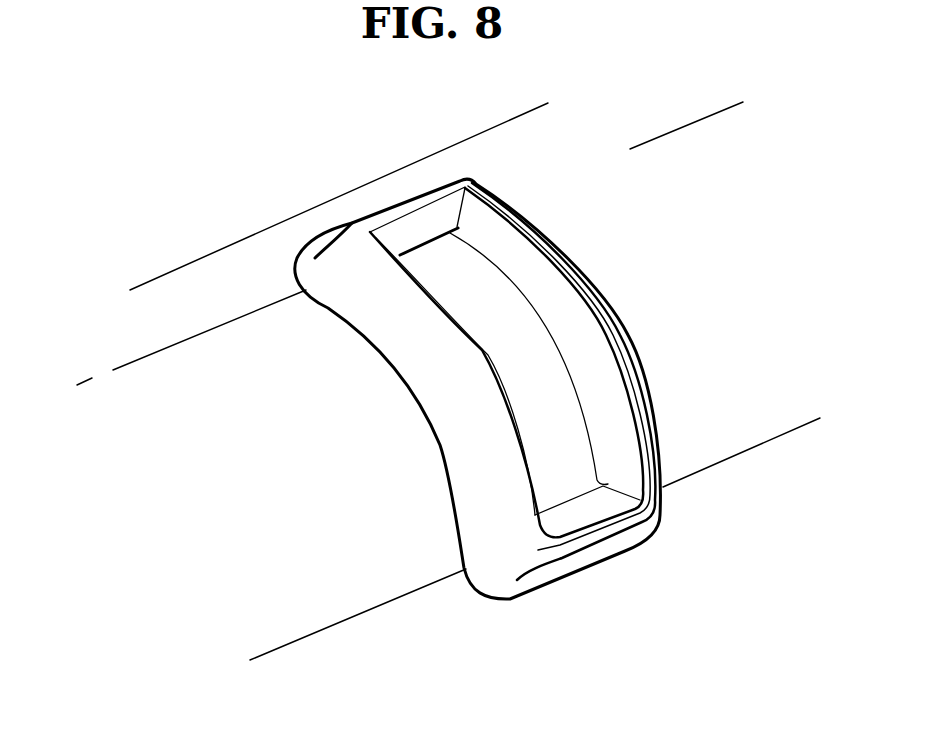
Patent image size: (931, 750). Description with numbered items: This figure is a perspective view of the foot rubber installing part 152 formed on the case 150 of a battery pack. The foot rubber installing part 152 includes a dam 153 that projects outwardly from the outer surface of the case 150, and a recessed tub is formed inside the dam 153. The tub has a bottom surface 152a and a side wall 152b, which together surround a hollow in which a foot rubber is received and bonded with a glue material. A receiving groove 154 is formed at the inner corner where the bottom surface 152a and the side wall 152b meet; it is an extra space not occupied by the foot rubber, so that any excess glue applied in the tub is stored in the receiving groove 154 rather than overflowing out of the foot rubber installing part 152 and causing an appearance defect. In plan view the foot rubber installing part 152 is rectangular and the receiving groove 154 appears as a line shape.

The case 150 is at (355, 169).
The foot rubber installing part 152 is at (622, 293).
The bottom surface 152a is at (547, 396).
The side wall 152b is at (617, 443).
The dam 153 is at (538, 238).
The receiving groove 154 is at (429, 250).